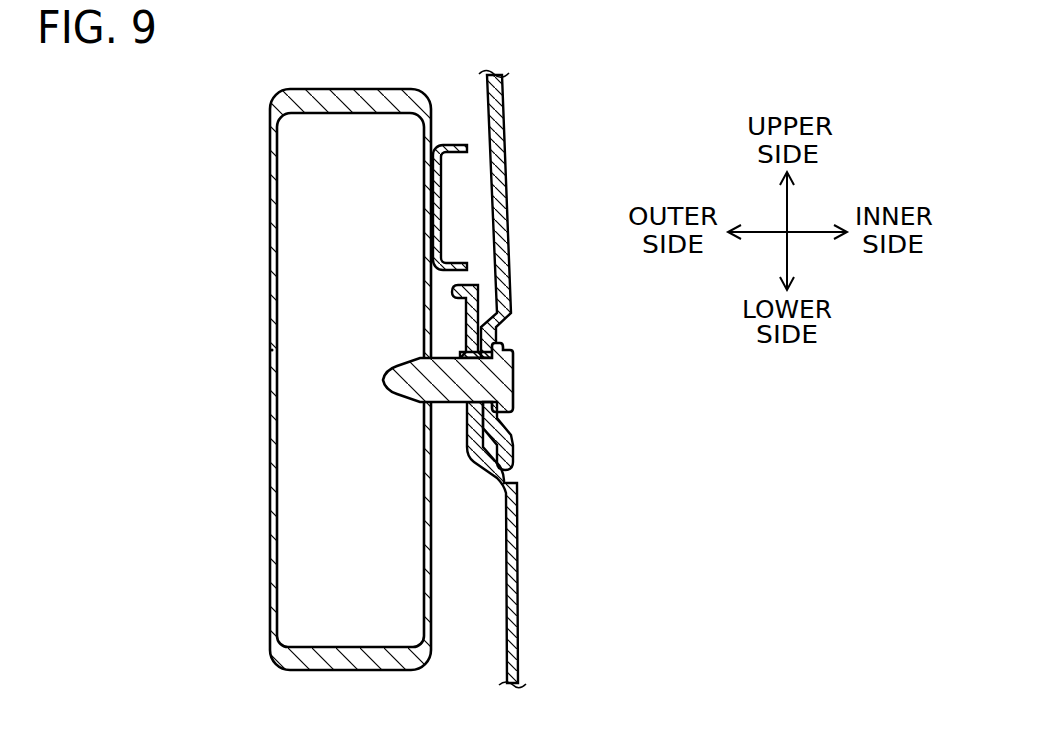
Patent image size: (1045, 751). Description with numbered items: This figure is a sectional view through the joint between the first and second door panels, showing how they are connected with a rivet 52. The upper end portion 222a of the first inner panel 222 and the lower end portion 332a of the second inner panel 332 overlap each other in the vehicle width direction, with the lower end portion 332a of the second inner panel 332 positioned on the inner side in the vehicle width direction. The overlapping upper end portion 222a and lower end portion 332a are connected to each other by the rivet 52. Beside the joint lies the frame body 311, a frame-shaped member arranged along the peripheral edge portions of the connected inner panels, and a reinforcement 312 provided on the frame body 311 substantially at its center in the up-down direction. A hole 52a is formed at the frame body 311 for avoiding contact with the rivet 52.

The frame body 311 is at (270, 215).
The reinforcement 312 is at (450, 143).
The second inner panel 332 is at (502, 133).
The lower end portion of the second inner panel 332a is at (512, 445).
The upper end portion of the first inner panel 222a is at (507, 305).
The first inner panel 222 is at (515, 580).
The rivet 52 is at (513, 372).
The hole 52a is at (270, 362).